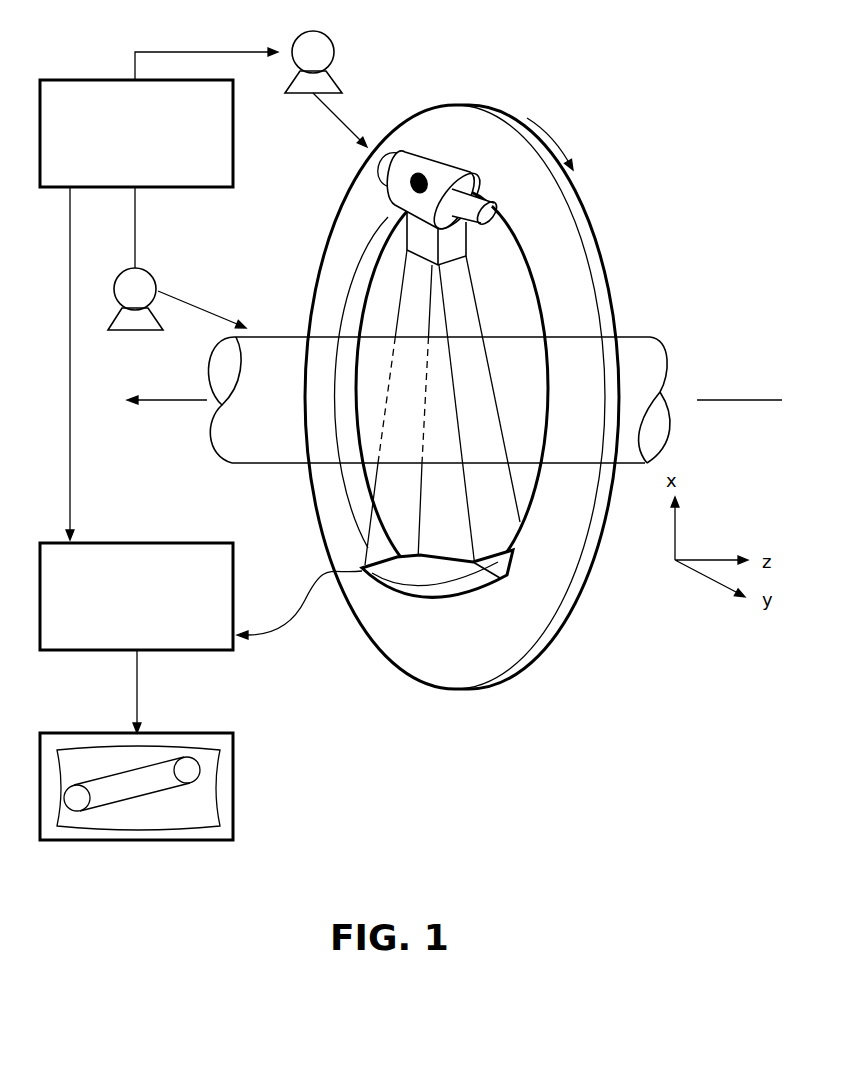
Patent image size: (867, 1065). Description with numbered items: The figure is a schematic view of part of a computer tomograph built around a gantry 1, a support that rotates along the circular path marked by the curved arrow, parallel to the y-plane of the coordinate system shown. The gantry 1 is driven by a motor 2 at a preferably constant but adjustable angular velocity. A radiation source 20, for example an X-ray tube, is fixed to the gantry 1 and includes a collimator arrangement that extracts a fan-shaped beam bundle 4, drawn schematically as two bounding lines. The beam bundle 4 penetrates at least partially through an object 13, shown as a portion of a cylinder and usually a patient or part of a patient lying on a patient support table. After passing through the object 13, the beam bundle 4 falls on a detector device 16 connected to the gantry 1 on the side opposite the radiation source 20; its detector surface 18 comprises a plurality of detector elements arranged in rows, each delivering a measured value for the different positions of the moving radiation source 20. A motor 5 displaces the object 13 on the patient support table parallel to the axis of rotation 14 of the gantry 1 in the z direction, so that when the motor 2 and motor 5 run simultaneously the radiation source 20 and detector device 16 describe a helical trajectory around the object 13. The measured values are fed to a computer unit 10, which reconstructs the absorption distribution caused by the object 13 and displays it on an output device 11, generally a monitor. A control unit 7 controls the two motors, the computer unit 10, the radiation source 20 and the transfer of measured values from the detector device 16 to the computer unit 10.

The gantry 1 is at (577, 541).
The motor 2 is at (336, 50).
The beam bundle 4 is at (472, 540).
The motor 5 is at (157, 283).
The control unit 7 is at (77, 80).
The computer unit 10 is at (137, 543).
The output device 11 is at (190, 733).
The object 13 is at (277, 350).
The axis of rotation 14 is at (172, 402).
The detector device 16 is at (420, 592).
The detector surface 18 is at (443, 586).
The radiation source 20 is at (425, 160).